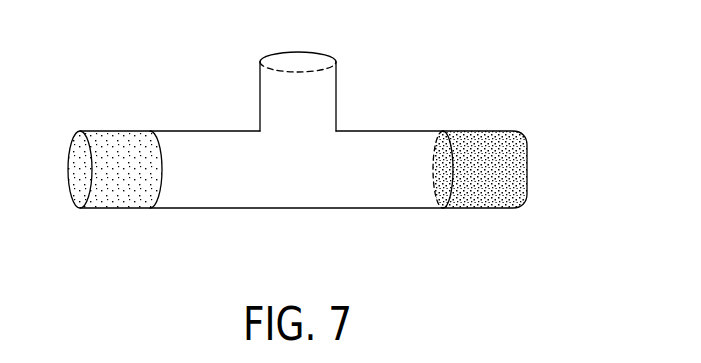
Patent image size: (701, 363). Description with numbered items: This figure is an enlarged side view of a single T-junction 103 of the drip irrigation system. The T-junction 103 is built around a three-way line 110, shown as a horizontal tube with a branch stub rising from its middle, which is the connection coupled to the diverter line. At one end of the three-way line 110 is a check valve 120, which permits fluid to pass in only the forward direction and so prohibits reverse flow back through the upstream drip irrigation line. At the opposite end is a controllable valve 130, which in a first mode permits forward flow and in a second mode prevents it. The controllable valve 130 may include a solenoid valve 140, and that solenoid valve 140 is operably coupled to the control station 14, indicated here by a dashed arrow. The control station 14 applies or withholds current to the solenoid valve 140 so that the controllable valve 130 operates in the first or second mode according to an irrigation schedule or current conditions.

The control station 14 is at (480, 156).
The T-junction 103 is at (307, 143).
The three-way line 110 is at (242, 130).
The check valve 120 is at (115, 198).
The controllable valve 130 is at (485, 198).
The solenoid valve 140 is at (480, 199).